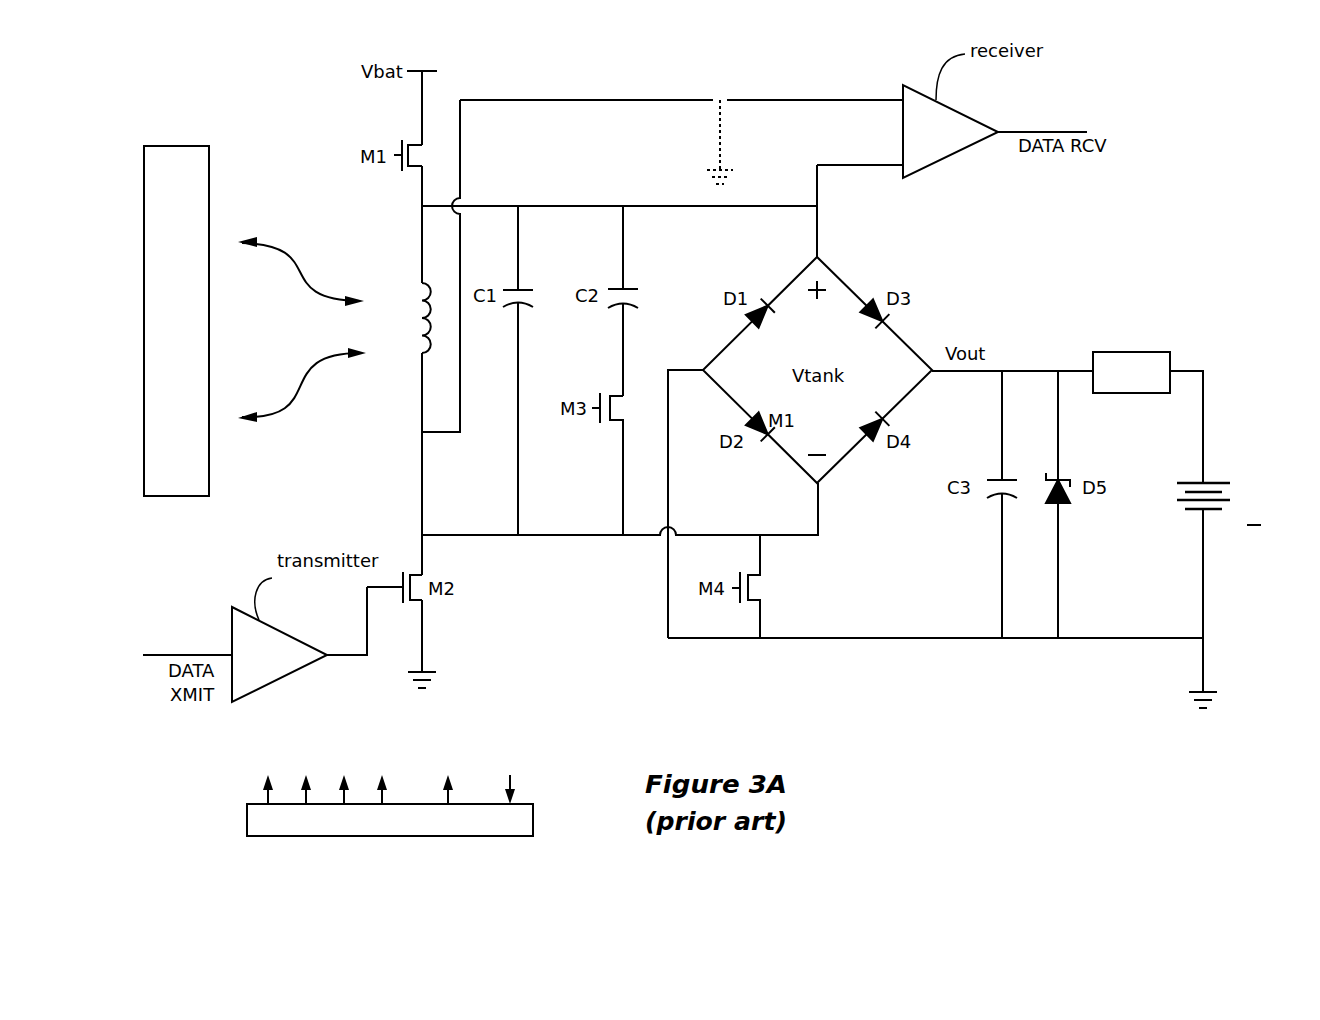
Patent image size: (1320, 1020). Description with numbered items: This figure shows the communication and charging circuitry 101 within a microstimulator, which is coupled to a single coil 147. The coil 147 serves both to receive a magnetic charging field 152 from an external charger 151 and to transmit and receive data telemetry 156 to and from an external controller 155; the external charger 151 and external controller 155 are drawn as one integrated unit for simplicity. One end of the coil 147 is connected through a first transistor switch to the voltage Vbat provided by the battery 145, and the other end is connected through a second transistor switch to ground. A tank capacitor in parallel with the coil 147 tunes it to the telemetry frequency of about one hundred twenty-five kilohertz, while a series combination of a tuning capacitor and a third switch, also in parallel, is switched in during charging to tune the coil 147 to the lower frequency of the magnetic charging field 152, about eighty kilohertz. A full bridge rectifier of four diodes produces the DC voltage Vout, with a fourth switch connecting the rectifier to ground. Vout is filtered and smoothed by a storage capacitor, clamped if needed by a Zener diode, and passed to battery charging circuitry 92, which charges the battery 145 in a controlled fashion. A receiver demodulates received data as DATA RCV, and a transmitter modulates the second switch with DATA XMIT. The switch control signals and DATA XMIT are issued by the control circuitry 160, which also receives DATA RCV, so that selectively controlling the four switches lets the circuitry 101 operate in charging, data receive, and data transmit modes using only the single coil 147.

The external charger 151 is at (177, 130).
The external controller 155 is at (231, 263).
The magnetic charging field 152 is at (301, 267).
The data telemetry 156 is at (303, 387).
The coil 147 is at (398, 318).
The battery charging circuitry 92 is at (1133, 352).
The battery 145 is at (1207, 483).
The communication and charging circuitry 101 is at (1028, 755).
The control circuitry 160 is at (390, 782).